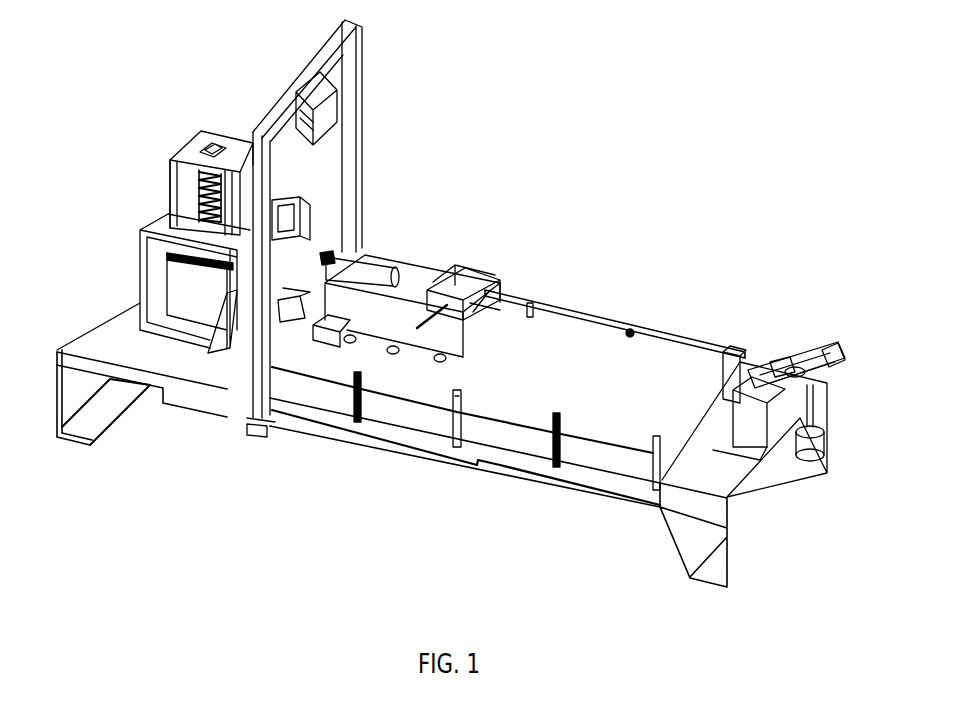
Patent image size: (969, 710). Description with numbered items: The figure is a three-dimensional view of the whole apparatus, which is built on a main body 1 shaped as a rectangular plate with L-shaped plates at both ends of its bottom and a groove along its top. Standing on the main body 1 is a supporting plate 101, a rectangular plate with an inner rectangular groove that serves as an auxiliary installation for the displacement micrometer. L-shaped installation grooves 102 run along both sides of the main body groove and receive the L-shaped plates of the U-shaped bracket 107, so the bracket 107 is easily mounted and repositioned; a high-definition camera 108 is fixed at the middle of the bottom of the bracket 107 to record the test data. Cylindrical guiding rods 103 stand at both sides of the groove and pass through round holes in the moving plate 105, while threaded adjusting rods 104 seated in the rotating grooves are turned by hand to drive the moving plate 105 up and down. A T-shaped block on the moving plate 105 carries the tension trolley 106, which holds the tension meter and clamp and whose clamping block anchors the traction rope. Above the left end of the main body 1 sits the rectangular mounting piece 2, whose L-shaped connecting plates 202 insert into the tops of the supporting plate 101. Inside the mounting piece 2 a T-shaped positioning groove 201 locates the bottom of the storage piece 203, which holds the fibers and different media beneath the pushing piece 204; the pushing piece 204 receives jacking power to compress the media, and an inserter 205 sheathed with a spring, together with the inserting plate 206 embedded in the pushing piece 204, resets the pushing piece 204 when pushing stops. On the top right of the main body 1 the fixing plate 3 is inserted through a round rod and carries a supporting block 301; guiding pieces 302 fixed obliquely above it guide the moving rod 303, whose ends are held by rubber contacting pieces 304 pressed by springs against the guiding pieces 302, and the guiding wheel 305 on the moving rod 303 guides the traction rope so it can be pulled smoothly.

The main body 1 is at (187, 397).
The supporting plate 101 is at (217, 363).
The installation grooves 102 is at (407, 445).
The guiding rods 103 is at (455, 453).
The adjusting rods 104 is at (557, 467).
The moving plate 105 is at (615, 358).
The tension trolley 106 is at (487, 293).
The bracket 107 is at (360, 187).
The high-definition camera 108 is at (323, 120).
The mounting piece 2 is at (135, 213).
The positioning groove 201 is at (160, 305).
The connecting plates 202 is at (293, 210).
The storage piece 203 is at (180, 277).
The pushing piece 204 is at (172, 203).
The inserter 205 is at (193, 207).
The inserting plate 206 is at (203, 147).
The fixing plate 3 is at (743, 453).
The supporting block 301 is at (825, 473).
The guiding piece 302 is at (825, 378).
The moving rod 303 is at (820, 390).
The contacting pieces 304 is at (780, 357).
The guiding wheel 305 is at (790, 357).